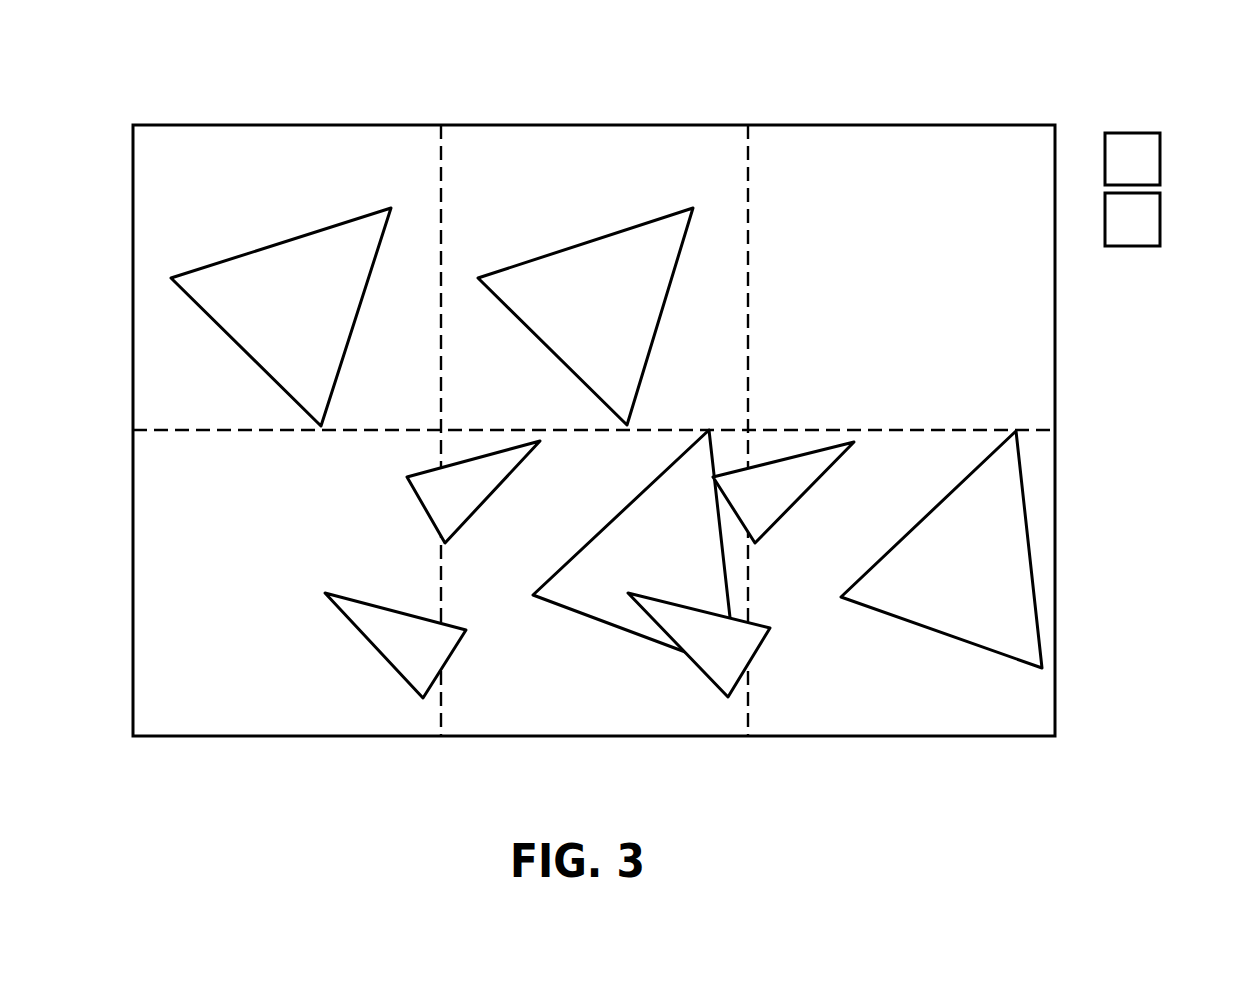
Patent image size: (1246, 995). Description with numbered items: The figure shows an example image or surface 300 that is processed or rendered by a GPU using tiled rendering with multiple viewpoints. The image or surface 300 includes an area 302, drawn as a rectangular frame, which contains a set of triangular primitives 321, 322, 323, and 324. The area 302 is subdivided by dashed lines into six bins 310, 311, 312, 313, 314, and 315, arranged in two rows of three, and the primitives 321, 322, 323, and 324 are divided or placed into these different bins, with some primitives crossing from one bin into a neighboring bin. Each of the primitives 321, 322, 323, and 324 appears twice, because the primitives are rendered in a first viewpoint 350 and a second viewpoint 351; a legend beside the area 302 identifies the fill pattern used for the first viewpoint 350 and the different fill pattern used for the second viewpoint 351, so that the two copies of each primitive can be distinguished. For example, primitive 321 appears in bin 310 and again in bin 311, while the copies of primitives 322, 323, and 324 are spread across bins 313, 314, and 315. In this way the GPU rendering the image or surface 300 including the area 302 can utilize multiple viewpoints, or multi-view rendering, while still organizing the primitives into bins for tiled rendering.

The image or surface 300 is at (79, 103).
The area 302 is at (609, 125).
The bin 310 is at (287, 277).
The bin 311 is at (594, 277).
The bin 312 is at (901, 277).
The bin 313 is at (287, 583).
The bin 314 is at (594, 583).
The bin 315 is at (901, 583).
The primitive 321 is at (391, 208).
The primitive 322 is at (407, 477).
The primitive 323 is at (325, 593).
The primitive 324 is at (533, 595).
The first viewpoint 350 is at (1162, 159).
The second viewpoint 351 is at (1162, 219).